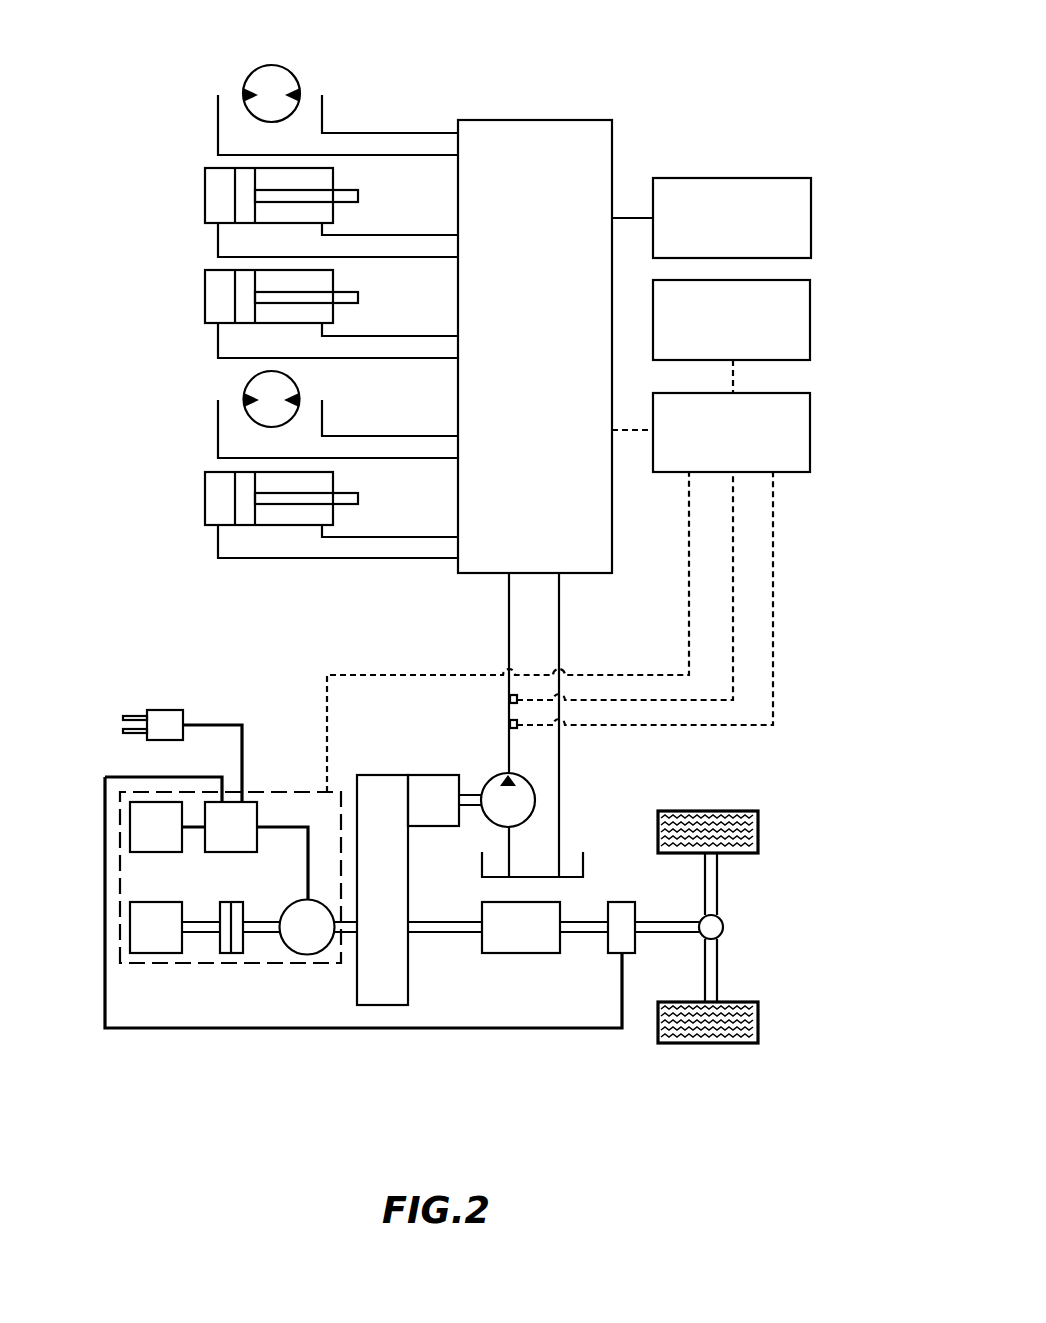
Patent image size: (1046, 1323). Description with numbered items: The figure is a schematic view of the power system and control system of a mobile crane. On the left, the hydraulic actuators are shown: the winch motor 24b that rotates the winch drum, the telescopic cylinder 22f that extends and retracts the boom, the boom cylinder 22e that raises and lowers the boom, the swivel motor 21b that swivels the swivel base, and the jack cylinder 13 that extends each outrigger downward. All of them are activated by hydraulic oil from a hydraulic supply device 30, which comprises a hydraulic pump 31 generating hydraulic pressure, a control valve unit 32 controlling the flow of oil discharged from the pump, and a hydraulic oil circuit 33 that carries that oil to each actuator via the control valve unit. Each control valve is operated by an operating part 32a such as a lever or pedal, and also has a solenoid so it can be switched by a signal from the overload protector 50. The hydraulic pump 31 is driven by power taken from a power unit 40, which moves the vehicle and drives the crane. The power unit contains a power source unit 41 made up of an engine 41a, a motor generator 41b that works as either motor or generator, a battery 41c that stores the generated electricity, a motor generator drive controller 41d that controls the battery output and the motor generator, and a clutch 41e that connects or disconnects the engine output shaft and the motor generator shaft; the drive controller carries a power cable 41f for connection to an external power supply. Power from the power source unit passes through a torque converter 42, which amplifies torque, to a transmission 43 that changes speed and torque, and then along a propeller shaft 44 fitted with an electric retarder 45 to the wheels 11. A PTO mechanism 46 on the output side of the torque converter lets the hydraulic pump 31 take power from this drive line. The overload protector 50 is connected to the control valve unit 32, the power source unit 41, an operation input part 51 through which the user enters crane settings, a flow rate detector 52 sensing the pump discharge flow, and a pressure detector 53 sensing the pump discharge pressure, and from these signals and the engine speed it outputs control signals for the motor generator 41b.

The wheels 11 is at (710, 810).
The jack cylinder 13 is at (205, 499).
The swivel motor 21b is at (245, 389).
The boom cylinder 22e is at (205, 297).
The telescopic cylinder 22f is at (205, 198).
The winch motor 24b is at (243, 84).
The hydraulic supply device 30 is at (628, 108).
The hydraulic pump 31 is at (490, 777).
The control valve unit 32 is at (538, 118).
The operating part 32a is at (811, 222).
The hydraulic oil circuit 33 is at (496, 637).
The power unit 40 is at (306, 724).
The power source unit 41 is at (117, 970).
The engine 41a is at (152, 953).
The motor generator 41b is at (300, 955).
The battery 41c is at (130, 852).
The motor generator drive controller 41d is at (258, 802).
The clutch 41e is at (227, 953).
The power cable 41f is at (207, 722).
The torque converter 42 is at (378, 1005).
The transmission 43 is at (515, 953).
The propeller shaft 44 is at (588, 933).
The electric retarder 45 is at (627, 953).
The PTO mechanism 46 is at (435, 773).
The overload protector 50 is at (810, 423).
The operation input part 51 is at (810, 322).
The flow rate detector 52 is at (517, 700).
The pressure detector 53 is at (517, 726).